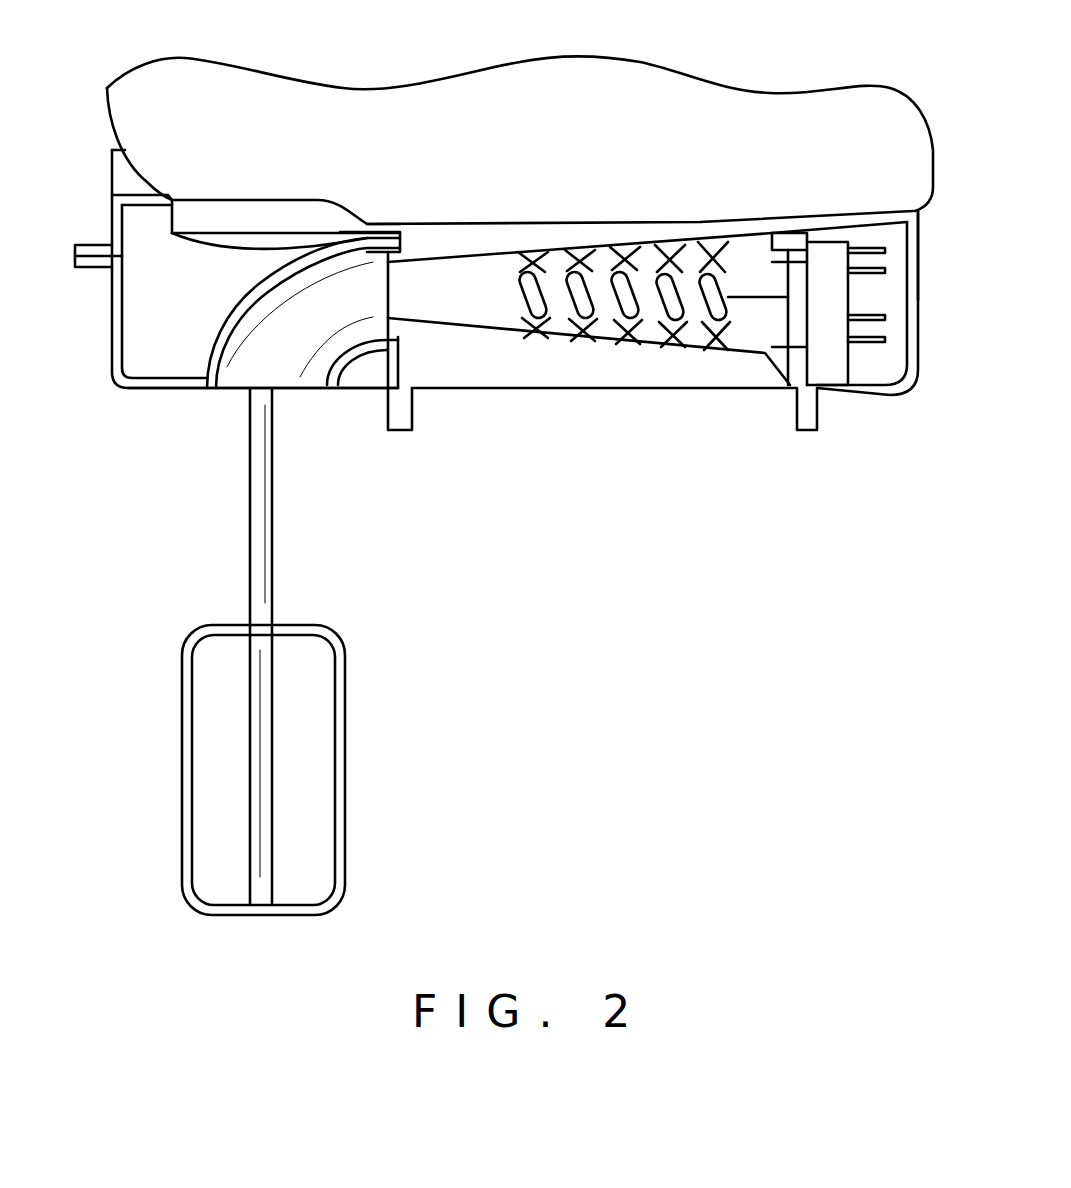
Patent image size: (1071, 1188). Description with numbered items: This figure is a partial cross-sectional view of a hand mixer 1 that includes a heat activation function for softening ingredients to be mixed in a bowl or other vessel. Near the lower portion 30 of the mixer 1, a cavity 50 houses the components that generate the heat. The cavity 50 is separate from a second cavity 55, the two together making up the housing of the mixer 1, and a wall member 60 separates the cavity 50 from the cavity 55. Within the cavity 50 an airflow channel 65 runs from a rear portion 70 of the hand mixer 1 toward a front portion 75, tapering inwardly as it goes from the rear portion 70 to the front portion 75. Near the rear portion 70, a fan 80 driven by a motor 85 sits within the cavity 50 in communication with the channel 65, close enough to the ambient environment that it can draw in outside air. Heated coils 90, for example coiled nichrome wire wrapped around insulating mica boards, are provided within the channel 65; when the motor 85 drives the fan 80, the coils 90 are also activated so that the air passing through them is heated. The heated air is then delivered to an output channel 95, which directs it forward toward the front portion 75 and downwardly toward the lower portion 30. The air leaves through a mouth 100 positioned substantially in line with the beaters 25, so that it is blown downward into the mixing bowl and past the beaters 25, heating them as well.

The mixer 1 is at (92, 128).
The beaters 25 is at (343, 762).
The lower portion 30 is at (154, 416).
The cavity 50 is at (168, 304).
The second cavity 55 is at (607, 127).
The wall member 60 is at (428, 222).
The airflow channel 65 is at (470, 297).
The rear portion 70 is at (940, 294).
The front portion 75 is at (95, 309).
The fan 80 is at (835, 377).
The motor 85 is at (885, 342).
The heated coils 90 is at (540, 312).
The output channel 95 is at (317, 323).
The mouth 100 is at (233, 390).